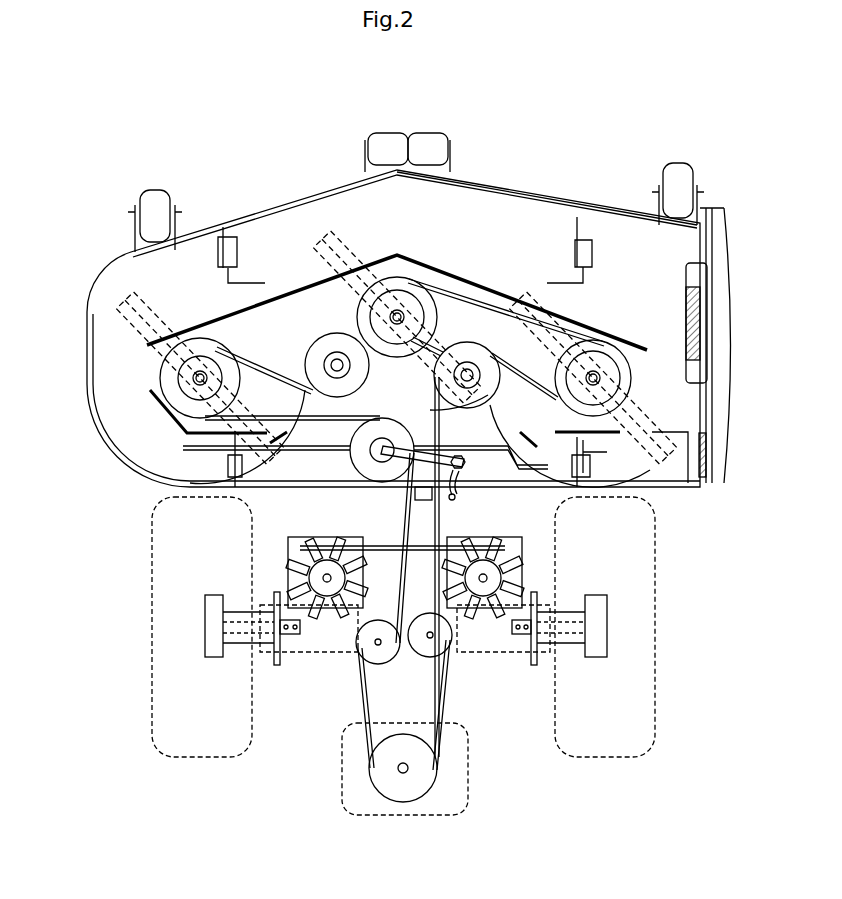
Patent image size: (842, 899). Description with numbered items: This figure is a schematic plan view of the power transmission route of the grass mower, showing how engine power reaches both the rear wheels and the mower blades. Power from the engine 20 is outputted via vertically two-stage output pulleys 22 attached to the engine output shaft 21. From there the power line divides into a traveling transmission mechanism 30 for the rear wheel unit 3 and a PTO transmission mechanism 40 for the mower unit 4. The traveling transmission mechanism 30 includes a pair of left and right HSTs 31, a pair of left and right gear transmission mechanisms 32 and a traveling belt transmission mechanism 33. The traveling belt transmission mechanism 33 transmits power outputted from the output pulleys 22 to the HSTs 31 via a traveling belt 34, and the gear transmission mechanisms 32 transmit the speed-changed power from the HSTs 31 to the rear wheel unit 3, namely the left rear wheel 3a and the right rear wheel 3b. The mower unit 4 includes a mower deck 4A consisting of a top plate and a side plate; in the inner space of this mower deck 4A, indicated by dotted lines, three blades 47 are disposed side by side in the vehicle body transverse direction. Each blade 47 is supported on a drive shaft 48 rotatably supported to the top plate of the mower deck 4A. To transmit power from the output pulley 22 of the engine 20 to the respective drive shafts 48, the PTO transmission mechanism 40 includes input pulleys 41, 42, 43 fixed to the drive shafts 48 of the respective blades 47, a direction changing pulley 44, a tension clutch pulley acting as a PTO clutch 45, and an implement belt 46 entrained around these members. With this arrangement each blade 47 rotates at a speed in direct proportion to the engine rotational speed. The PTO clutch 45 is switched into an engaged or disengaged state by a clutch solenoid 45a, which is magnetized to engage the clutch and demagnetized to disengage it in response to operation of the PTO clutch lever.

The mower unit 4 is at (269, 197).
The mower deck 4A is at (526, 208).
The blade 47 is at (158, 302).
The input pulley 42 is at (412, 292).
The input pulley 43 is at (606, 341).
The input pulley 41 is at (192, 380).
The drive shaft 48 is at (206, 374).
The direction changing pulley 44 is at (357, 378).
The implement belt 46 is at (283, 376).
The PTO clutch 45 is at (352, 456).
The clutch solenoid 45a is at (408, 528).
The PTO transmission mechanism 40 is at (444, 522).
The traveling belt 34 is at (386, 545).
The HST 31 is at (321, 536).
The traveling belt transmission mechanism 33 is at (542, 567).
The gear transmission mechanism 32 is at (304, 650).
The traveling transmission mechanism 30 is at (358, 614).
The rear wheel unit 3 is at (404, 627).
The left rear wheel 3a is at (152, 633).
The right rear wheel 3b is at (660, 657).
The engine 20 is at (412, 818).
The output pulley 22 is at (424, 772).
The engine output shaft 21 is at (398, 768).